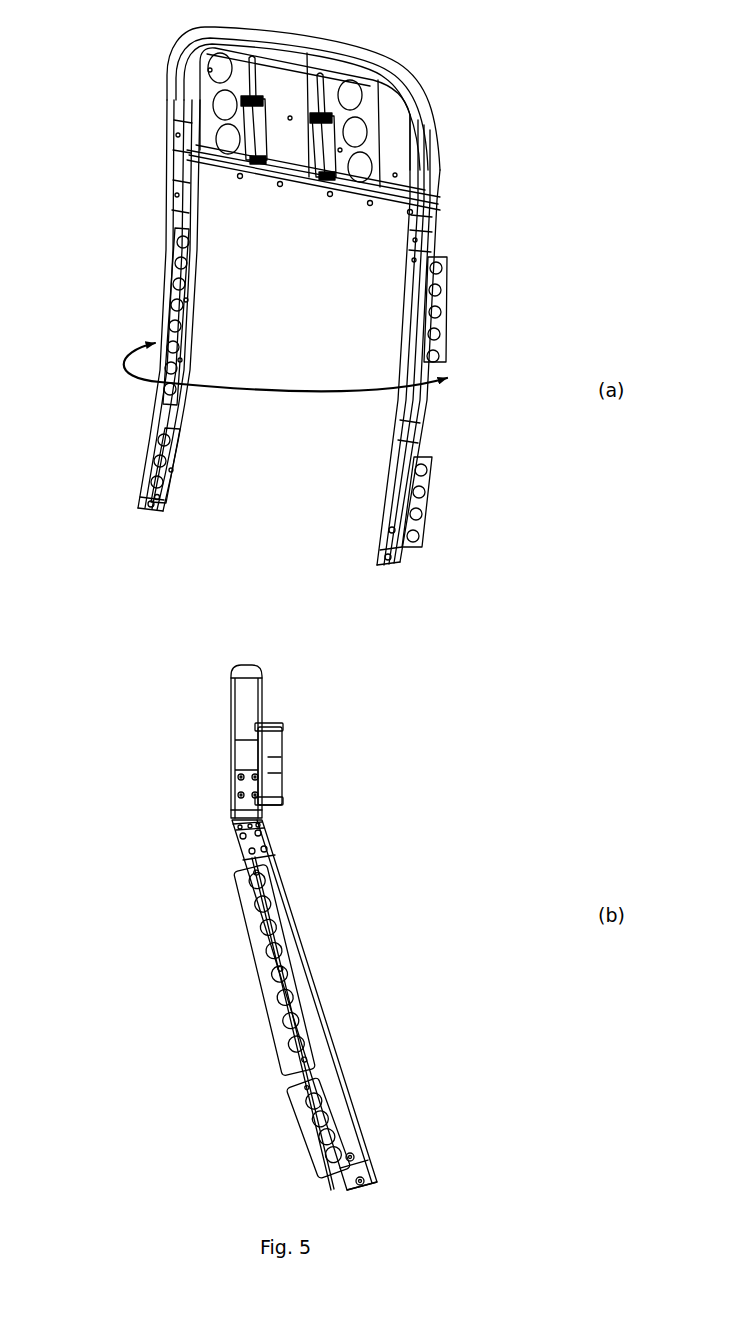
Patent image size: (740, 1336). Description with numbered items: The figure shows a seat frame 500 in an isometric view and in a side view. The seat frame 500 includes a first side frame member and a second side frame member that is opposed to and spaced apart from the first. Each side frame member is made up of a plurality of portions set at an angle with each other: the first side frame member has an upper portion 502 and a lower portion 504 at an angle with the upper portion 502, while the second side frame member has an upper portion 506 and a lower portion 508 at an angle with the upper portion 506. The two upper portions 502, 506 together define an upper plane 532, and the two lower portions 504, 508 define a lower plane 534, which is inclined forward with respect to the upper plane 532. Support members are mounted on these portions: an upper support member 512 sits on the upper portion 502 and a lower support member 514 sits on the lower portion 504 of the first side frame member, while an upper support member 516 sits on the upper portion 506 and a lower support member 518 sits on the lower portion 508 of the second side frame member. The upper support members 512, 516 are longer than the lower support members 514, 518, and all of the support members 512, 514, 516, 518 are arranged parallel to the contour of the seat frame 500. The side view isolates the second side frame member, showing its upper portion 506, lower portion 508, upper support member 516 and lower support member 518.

The seat frame 500 is at (597, 118).
The upper portion of the first side frame member 502 is at (405, 283).
The lower portion of the first side frame member 504 is at (392, 498).
The upper portion of the second side frame member 506 is at (197, 258).
The lower portion of the second side frame member 508 is at (152, 514).
The upper support member 512 is at (447, 272).
The lower support member 514 is at (420, 527).
The upper support member 516 is at (172, 240).
The lower support member 518 is at (143, 462).
The upper plane 532 is at (285, 342).
The lower plane 534 is at (280, 483).